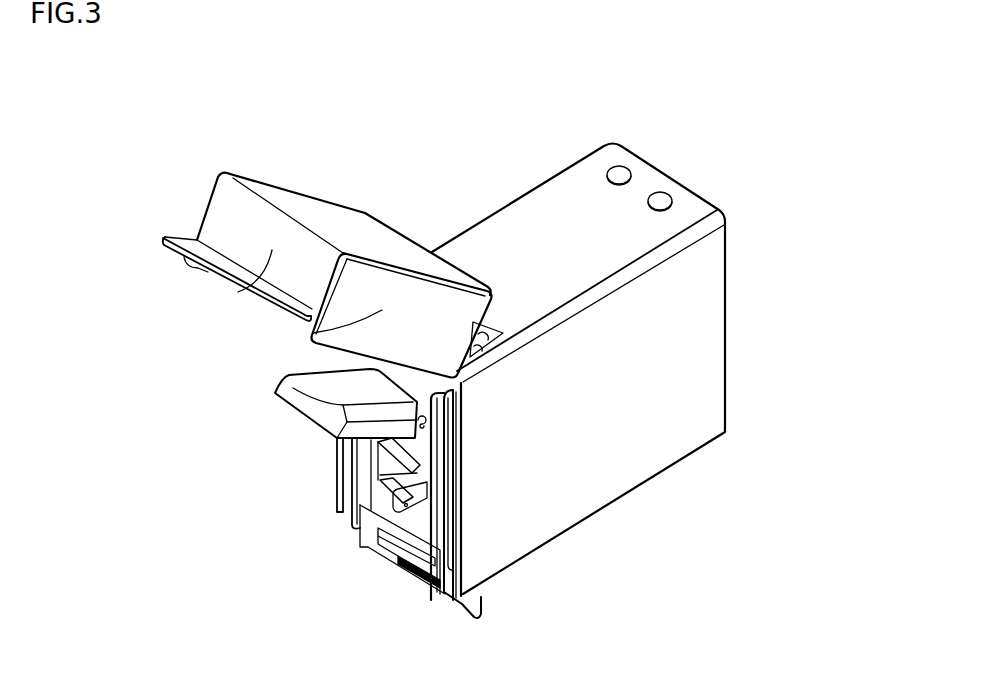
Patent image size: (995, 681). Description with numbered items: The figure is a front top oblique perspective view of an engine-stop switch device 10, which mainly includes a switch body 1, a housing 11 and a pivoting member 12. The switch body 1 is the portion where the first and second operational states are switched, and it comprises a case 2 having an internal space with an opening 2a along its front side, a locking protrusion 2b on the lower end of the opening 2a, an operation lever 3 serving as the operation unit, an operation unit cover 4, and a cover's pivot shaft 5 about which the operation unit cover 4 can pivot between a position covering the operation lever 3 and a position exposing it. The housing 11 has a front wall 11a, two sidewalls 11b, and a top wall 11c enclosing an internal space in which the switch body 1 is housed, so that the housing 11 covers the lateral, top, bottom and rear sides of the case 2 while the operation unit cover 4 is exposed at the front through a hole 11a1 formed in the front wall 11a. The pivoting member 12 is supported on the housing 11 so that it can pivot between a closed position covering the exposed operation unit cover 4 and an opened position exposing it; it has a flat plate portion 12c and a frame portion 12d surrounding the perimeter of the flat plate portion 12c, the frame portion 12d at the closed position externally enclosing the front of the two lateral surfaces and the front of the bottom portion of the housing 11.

The switch body 1 is at (338, 558).
The case 2 is at (363, 488).
The opening 2a is at (387, 497).
The locking protrusion 2b is at (377, 515).
The operation lever 3 is at (400, 453).
The operation unit cover 4 is at (292, 388).
The cover's pivot shaft 5 is at (420, 428).
The engine-stop switch device 10 is at (698, 116).
The housing 11 is at (583, 183).
The front wall 11a is at (447, 391).
The hole 11a1 is at (374, 502).
The sidewalls 11b is at (705, 346).
The top wall 11c is at (530, 218).
The pivoting member 12 is at (327, 215).
The flat plate portion 12c is at (277, 198).
The frame portion 12d is at (325, 337).